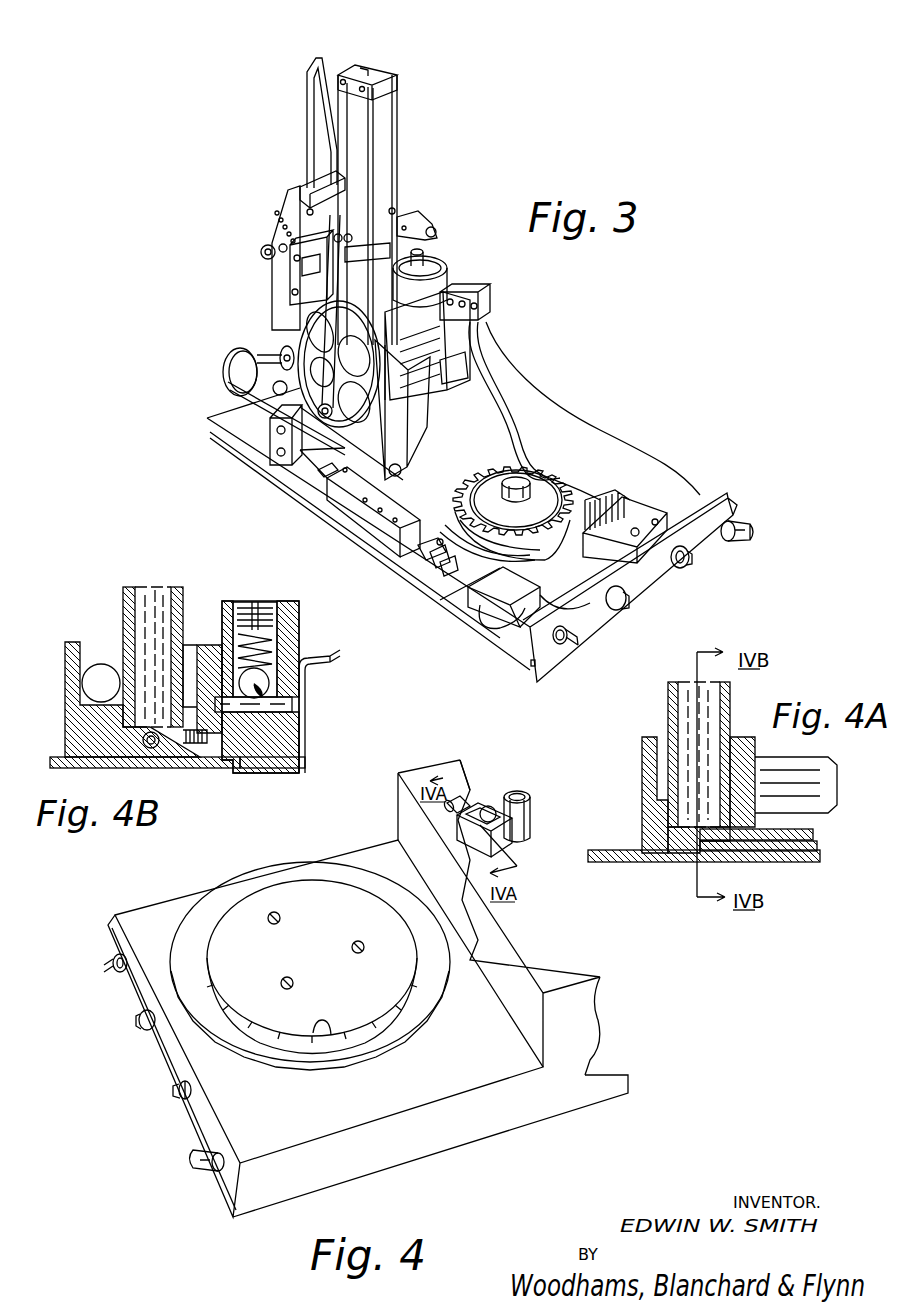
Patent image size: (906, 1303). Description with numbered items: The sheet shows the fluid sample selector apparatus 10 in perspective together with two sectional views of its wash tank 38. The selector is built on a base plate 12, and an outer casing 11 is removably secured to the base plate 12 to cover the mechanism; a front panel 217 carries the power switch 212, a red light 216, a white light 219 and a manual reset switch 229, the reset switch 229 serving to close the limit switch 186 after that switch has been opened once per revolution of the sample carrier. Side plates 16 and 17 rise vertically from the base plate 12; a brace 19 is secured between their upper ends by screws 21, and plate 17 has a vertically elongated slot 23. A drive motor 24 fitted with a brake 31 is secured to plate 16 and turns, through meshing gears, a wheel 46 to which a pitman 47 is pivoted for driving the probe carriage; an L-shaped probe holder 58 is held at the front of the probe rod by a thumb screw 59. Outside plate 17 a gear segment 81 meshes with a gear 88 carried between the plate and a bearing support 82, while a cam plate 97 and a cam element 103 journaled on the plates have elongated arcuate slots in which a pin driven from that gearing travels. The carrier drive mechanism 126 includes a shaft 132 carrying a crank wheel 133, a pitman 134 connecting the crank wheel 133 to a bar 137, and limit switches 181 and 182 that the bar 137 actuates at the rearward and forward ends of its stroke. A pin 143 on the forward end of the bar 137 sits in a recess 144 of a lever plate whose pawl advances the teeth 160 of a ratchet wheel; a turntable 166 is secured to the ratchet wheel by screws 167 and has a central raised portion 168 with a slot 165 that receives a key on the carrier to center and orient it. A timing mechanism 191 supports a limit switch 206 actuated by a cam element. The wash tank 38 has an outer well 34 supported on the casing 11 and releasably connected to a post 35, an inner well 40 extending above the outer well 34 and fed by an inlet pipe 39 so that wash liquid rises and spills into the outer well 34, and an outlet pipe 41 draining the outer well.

In FIG. 3, the fluid sample selector apparatus 10 is at (574, 300).
In FIG. 3, the outer casing 11 is at (472, 535).
In FIG. 4, the outer casing 11 is at (578, 958).
In FIG. 4, the base plate 12 is at (608, 1065).
In FIG. 3, the side plate 16 is at (395, 117).
In FIG. 3, the side plate 17 is at (372, 138).
In FIG. 3, the brace 19 is at (372, 70).
In FIG. 3, the screws 21 is at (343, 78).
In FIG. 3, the vertically elongated slot 23 is at (353, 153).
In FIG. 3, the drive motor 24 is at (437, 383).
In FIG. 3, the brake 31 is at (462, 368).
In FIG. 4A, the outer well 34 is at (660, 743).
In FIG. 4B, the outer well 34 is at (92, 648).
In FIG. 4, the post 35 is at (530, 805).
In FIG. 4B, the post 35 is at (289, 628).
In FIG. 4, the wash tank 38 is at (458, 851).
In FIG. 4A, the wash tank 38 is at (721, 758).
In FIG. 4B, the wash tank 38 is at (185, 673).
In FIG. 4, the inlet pipe 39 is at (473, 803).
In FIG. 4A, the inlet pipe 39 is at (800, 829).
In FIG. 4B, the inlet pipe 39 is at (163, 747).
In FIG. 4A, the inner well 40 is at (687, 692).
In FIG. 4B, the inner well 40 is at (162, 602).
In FIG. 4, the outlet pipe 41 is at (450, 820).
In FIG. 4A, the outlet pipe 41 is at (823, 778).
In FIG. 3, the wheel 46 is at (348, 422).
In FIG. 3, the pitman 47 is at (366, 402).
In FIG. 3, the L-shaped probe holder 58 is at (417, 215).
In FIG. 3, the thumb screw 59 is at (393, 208).
In FIG. 3, the gear segment 81 is at (277, 213).
In FIG. 3, the bearing support 82 is at (290, 287).
In FIG. 3, the gear 88 is at (328, 237).
In FIG. 3, the cam plate 97 is at (325, 153).
In FIG. 3, the cam element 103 is at (308, 92).
In FIG. 3, the carrier drive mechanism 126 is at (334, 522).
In FIG. 3, the shaft 132 is at (275, 348).
In FIG. 3, the crank wheel 133 is at (240, 355).
In FIG. 3, the pitman 134 is at (247, 388).
In FIG. 3, the bar 137 is at (327, 468).
In FIG. 3, the pin 143 is at (432, 557).
In FIG. 3, the recess 144 is at (420, 550).
In FIG. 3, the teeth 160 is at (552, 520).
In FIG. 4, the slot 165 is at (320, 1033).
In FIG. 4, the turntable 166 is at (403, 1040).
In FIG. 4, the screws 167 is at (290, 976).
In FIG. 4, the central raised portion 168 is at (390, 983).
In FIG. 3, the limit switch 181 is at (280, 458).
In FIG. 3, the limit switch 182 is at (467, 590).
In FIG. 3, the limit switch 186 is at (650, 515).
In FIG. 3, the timing mechanism 191 is at (444, 249).
In FIG. 3, the limit switch 206 is at (477, 290).
In FIG. 3, the switch 212 is at (577, 648).
In FIG. 4, the switch 212 is at (106, 967).
In FIG. 3, the red light 216 is at (754, 538).
In FIG. 4, the red light 216 is at (190, 1160).
In FIG. 4, the front panel 217 is at (163, 1060).
In FIG. 3, the white light 219 is at (614, 602).
In FIG. 4, the white light 219 is at (137, 1021).
In FIG. 3, the manual reset switch 229 is at (690, 565).
In FIG. 4, the manual reset switch 229 is at (172, 1094).